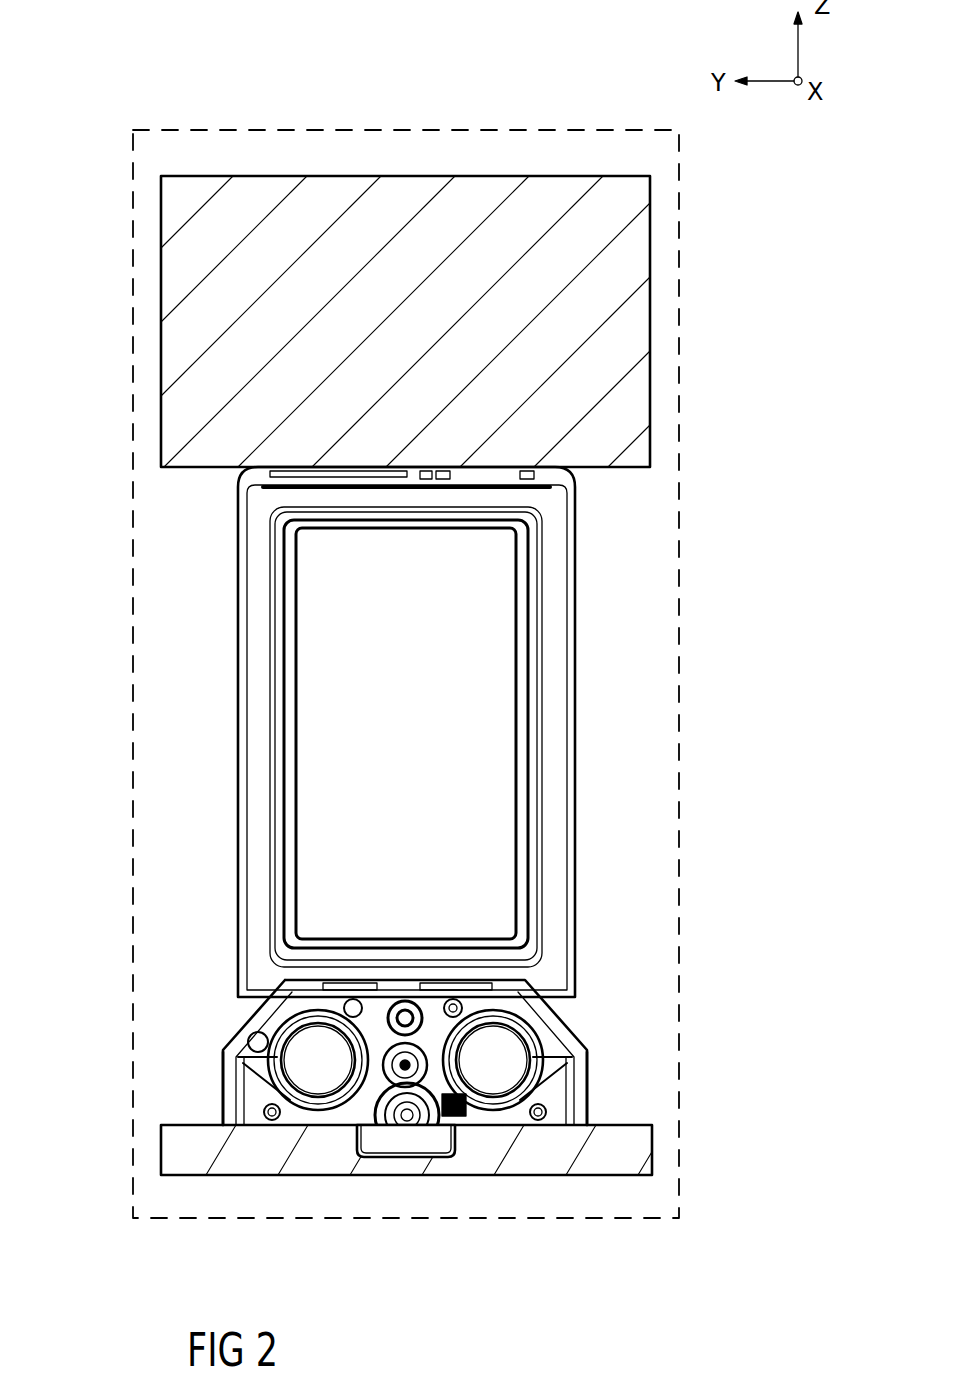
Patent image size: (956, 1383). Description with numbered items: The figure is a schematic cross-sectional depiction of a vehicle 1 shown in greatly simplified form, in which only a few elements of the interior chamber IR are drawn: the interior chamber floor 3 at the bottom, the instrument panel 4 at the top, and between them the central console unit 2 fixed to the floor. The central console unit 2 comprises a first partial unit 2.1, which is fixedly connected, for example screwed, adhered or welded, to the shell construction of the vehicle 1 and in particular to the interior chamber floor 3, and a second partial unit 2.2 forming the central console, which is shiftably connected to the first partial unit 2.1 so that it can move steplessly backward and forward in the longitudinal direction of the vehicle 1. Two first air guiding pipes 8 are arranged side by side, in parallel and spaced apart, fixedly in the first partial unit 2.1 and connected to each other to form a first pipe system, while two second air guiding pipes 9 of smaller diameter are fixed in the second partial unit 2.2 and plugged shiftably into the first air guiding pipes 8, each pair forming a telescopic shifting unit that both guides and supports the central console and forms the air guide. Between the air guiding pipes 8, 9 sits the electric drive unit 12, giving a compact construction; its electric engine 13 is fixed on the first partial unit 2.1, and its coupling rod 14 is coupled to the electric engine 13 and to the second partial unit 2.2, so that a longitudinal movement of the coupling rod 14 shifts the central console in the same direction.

The vehicle 1 is at (133, 252).
The interior chamber IR is at (158, 515).
The central console unit 2 is at (631, 692).
The first partial unit 2.1 is at (588, 1066).
The second partial unit 2.2 is at (576, 800).
The interior chamber floor 3 is at (647, 1158).
The instrument panel 4 is at (637, 322).
The first air guiding pipe 8 is at (258, 1038).
The second air guiding pipe 9 is at (240, 1083).
The drive unit 12 is at (398, 1160).
The electric engine 13 is at (405, 1140).
The coupling rod 14 is at (398, 1012).